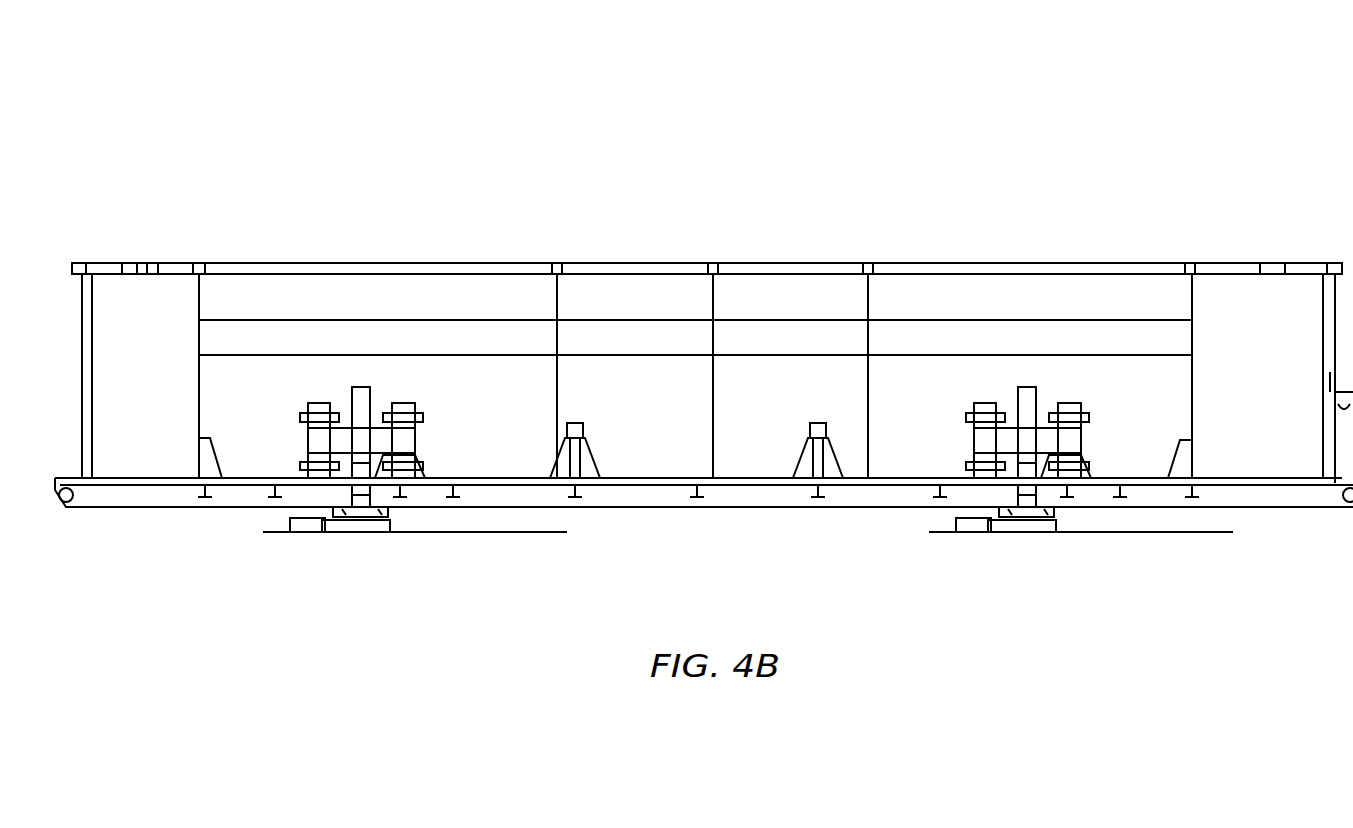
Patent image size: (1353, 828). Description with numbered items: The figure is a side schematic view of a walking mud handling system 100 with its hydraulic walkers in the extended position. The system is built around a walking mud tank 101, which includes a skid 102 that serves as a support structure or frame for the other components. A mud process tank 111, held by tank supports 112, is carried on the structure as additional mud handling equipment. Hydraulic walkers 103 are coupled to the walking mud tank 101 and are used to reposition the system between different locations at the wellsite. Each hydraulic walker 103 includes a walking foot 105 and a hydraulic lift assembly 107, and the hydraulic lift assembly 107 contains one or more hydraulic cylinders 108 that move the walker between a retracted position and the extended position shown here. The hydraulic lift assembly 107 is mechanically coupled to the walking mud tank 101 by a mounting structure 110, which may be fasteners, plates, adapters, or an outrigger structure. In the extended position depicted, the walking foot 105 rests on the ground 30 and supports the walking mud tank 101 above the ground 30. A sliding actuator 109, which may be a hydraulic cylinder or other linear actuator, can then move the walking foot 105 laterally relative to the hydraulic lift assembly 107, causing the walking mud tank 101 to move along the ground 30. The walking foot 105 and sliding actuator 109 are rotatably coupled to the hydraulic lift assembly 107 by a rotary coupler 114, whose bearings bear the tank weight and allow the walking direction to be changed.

The walking mud handling system 100 is at (165, 145).
The walking mud tank 101 is at (108, 262).
The skid 102 is at (697, 508).
The hydraulic walkers 103 is at (279, 540).
The walking foot 105 is at (370, 534).
The hydraulic lift assembly 107 is at (384, 393).
The hydraulic cylinders 108 is at (362, 432).
The sliding actuator 109 is at (332, 534).
The mounting structure 110 is at (416, 423).
The mud process tank 111 is at (1178, 413).
The tank supports 112 is at (600, 474).
The rotary coupler 114 is at (390, 510).
The ground 30 is at (498, 533).